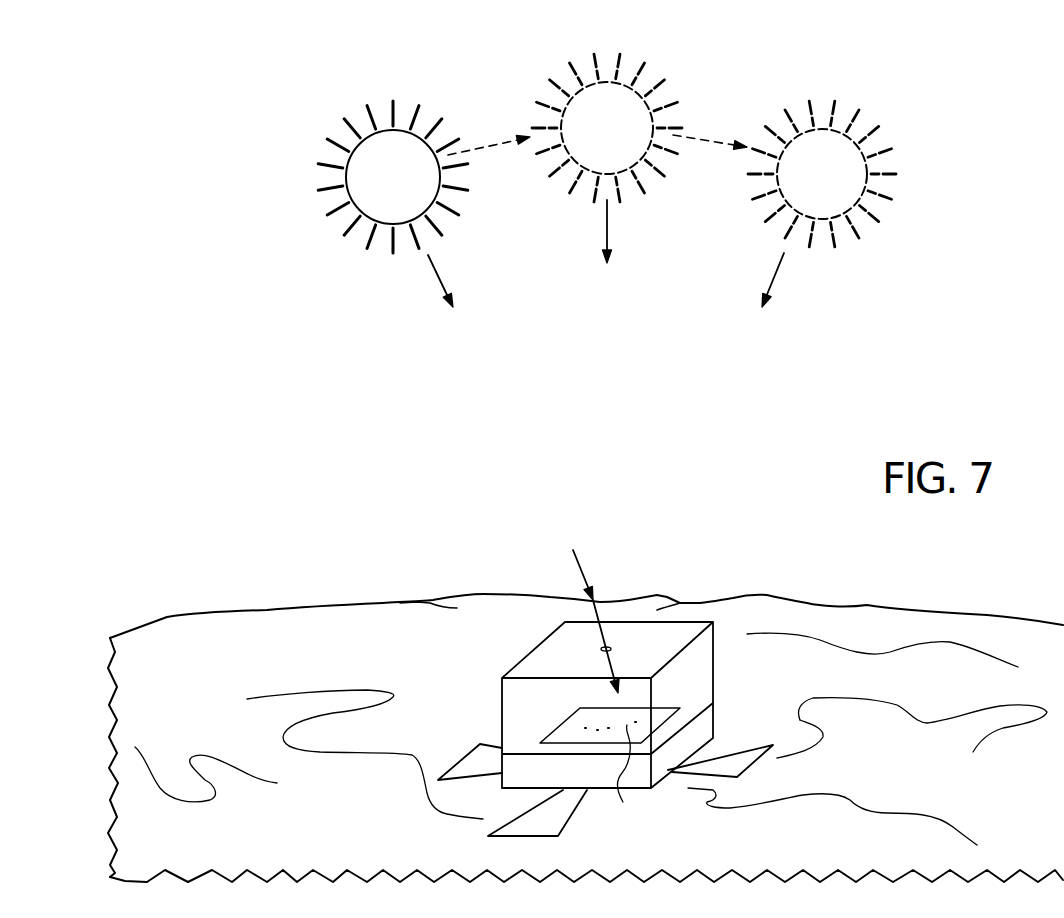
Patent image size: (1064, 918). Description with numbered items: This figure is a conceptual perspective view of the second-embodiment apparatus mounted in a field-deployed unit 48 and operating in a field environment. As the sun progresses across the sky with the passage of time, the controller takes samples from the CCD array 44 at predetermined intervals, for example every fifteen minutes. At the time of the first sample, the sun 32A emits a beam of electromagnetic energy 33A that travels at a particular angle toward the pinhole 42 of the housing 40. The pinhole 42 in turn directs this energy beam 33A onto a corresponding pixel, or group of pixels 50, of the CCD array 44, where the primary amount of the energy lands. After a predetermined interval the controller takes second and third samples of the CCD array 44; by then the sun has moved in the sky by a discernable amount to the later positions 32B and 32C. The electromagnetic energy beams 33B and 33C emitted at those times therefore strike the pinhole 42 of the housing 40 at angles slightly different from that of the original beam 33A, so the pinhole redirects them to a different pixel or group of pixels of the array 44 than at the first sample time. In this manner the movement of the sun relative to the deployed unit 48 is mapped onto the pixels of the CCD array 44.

The sun at first sample position 32A is at (400, 131).
The sun at second sample position 32B is at (607, 82).
The sun at third sample position 32C is at (835, 129).
The beam of electromagnetic energy 33A is at (429, 276).
The electromagnetic energy beam at second sample 33B is at (605, 240).
The electromagnetic energy beam at third sample 33C is at (781, 279).
The housing 40 is at (695, 630).
The pinhole 42 is at (611, 648).
The CCD array 44 is at (653, 727).
The field-deployed unit 48 is at (717, 717).
The group of pixels 50 is at (629, 779).